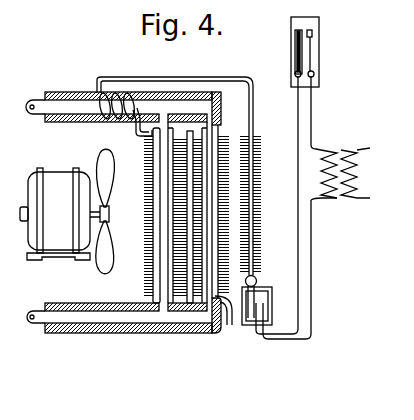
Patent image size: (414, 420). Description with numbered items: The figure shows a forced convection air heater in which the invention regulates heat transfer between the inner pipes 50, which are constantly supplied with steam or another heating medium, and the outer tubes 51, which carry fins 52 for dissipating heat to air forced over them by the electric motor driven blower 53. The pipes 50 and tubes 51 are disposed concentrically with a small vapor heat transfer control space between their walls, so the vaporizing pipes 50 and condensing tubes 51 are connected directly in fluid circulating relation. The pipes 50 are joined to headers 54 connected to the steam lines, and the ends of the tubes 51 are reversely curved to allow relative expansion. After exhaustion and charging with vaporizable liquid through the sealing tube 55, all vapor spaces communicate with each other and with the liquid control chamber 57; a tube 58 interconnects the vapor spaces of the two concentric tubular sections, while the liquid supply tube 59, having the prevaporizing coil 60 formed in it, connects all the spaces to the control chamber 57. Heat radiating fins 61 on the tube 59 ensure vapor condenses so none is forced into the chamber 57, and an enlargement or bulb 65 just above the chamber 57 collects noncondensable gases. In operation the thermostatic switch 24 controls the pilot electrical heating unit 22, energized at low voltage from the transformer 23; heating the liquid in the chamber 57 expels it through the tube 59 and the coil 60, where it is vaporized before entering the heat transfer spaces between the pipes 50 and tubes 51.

The electrical heating unit 22 is at (258, 329).
The transformer 23 is at (339, 148).
The thermostatic switch 24 is at (312, 63).
The inner pipes 50 is at (155, 242).
The outer tubes 51 is at (150, 277).
The fins 52 is at (229, 148).
The electric motor driven blower 53 is at (67, 211).
The headers 54 is at (205, 95).
The sealing tube 55 is at (225, 326).
The liquid control chamber 57 is at (272, 305).
The tube 58 is at (186, 134).
The liquid supply tube 59 is at (254, 118).
The prevaporizing coil 60 is at (118, 98).
The heat radiating fins 61 is at (261, 210).
The enlargement or bulb 65 is at (257, 279).